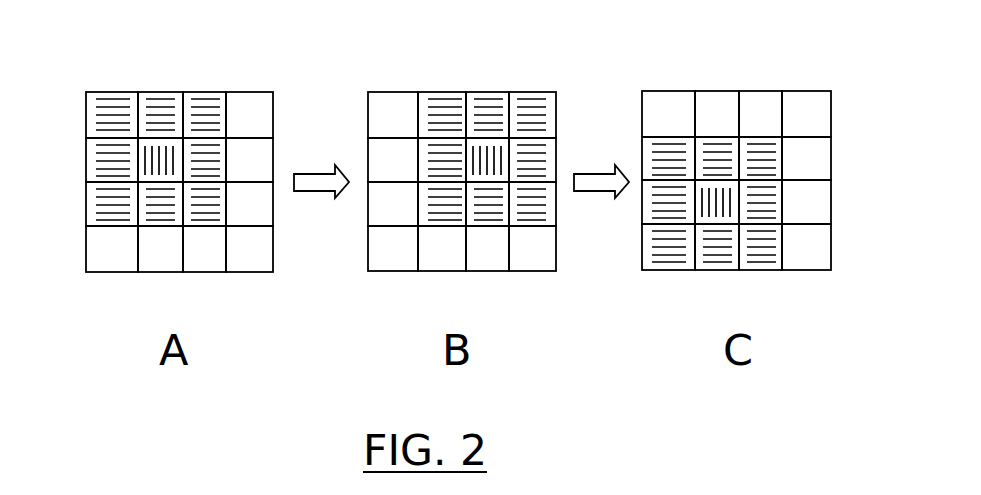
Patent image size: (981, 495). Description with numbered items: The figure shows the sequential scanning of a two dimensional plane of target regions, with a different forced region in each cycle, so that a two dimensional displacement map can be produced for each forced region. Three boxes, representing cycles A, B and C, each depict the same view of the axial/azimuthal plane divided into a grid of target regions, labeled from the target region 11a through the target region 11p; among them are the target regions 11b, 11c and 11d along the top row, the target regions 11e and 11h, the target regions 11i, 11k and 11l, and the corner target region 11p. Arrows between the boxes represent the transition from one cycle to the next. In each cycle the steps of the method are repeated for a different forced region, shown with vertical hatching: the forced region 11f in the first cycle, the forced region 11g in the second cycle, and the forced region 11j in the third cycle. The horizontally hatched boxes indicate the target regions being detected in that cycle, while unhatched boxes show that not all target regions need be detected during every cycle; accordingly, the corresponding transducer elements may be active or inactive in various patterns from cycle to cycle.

The target region 11a is at (97, 97).
The target region 11b is at (153, 95).
The target region 11c is at (188, 95).
The target region 11d is at (247, 100).
The target region 11e is at (92, 158).
The forced region 11f is at (170, 150).
The forced region 11g is at (502, 158).
The target region 11h is at (267, 158).
The target region 11i is at (93, 203).
The forced region 11j is at (702, 205).
The target region 11k is at (547, 203).
The target region 11l is at (400, 260).
The target region 11p is at (252, 260).